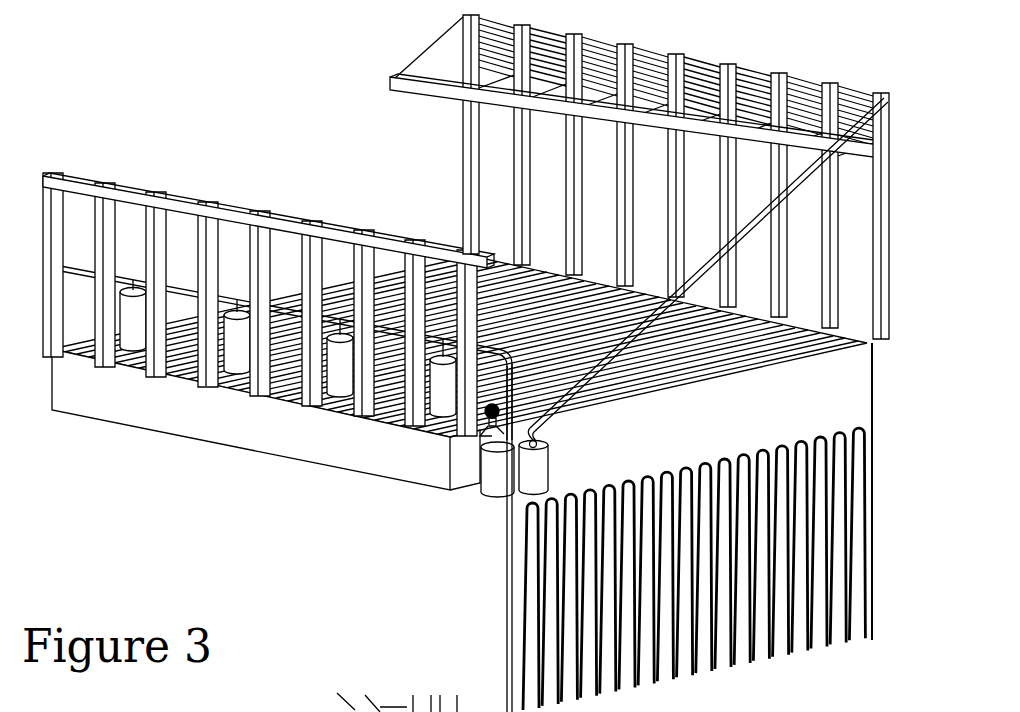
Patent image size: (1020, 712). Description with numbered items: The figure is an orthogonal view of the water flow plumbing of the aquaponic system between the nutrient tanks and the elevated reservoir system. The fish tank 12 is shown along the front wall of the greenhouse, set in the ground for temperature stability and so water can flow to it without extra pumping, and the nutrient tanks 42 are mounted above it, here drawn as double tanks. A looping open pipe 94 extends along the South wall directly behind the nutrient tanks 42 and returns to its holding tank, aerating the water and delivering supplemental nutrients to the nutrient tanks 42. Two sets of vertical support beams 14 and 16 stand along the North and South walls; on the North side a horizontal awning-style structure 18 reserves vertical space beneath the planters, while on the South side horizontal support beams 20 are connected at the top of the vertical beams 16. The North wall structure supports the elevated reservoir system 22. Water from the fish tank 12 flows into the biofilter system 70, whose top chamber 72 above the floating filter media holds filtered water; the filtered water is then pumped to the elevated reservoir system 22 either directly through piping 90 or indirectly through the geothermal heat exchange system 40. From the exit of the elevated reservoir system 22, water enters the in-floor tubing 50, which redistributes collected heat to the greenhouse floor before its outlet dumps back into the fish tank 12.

The fish tank 12 is at (93, 407).
The vertical support beams 14 is at (895, 125).
The vertical support beams 16 is at (43, 198).
The horizontal awning-style structure 18 is at (413, 88).
The horizontal support beams 20 is at (132, 187).
The elevated reservoir system 22 is at (697, 68).
The geothermal heat exchange system 40 is at (520, 568).
The nutrient tanks 42 is at (347, 372).
The tubing 50 is at (665, 382).
The biofilter system 70 is at (497, 490).
The top chamber 72 is at (345, 708).
The piping 90 is at (745, 218).
The open pipe 94 is at (232, 298).